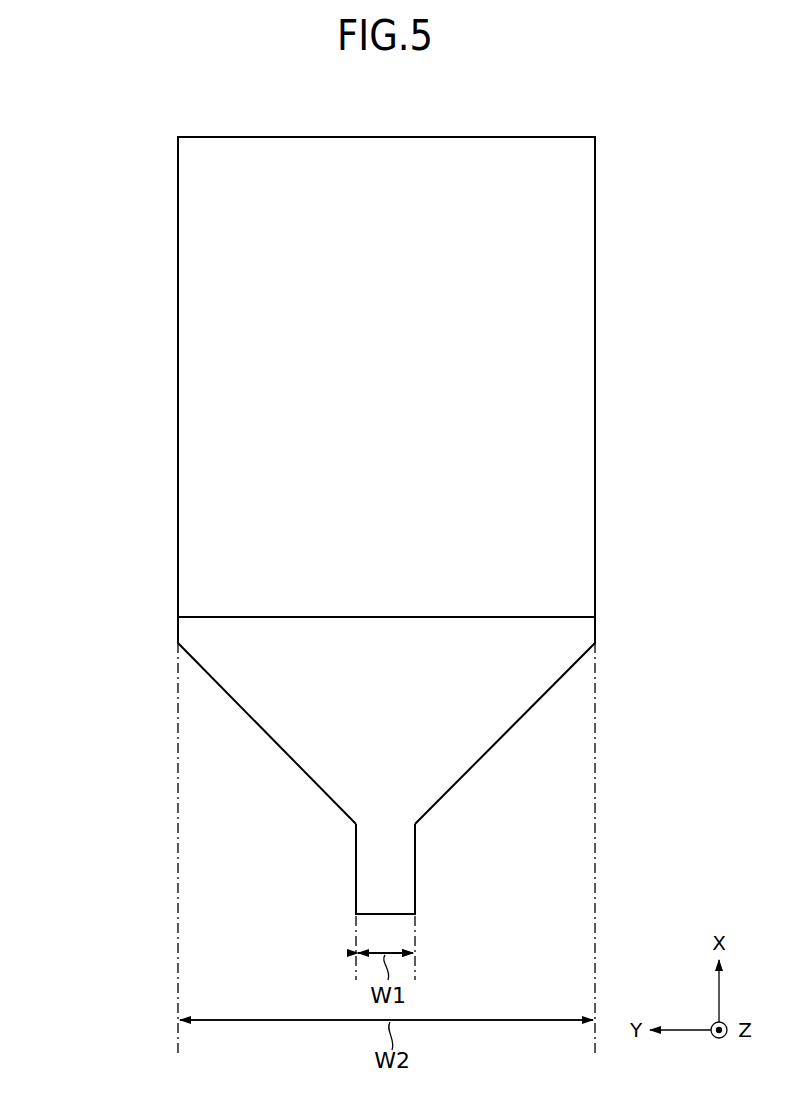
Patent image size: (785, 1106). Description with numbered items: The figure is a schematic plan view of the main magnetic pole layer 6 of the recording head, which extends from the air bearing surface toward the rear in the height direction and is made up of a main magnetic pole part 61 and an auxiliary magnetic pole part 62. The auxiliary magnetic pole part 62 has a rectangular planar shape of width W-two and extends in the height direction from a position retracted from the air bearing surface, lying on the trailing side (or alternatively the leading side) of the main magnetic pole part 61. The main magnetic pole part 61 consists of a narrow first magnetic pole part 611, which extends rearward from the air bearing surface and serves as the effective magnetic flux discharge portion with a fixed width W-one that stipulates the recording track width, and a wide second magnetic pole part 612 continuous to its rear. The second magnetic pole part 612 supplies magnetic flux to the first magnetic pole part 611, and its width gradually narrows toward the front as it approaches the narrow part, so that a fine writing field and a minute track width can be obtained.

The main magnetic pole layer 6 is at (65, 622).
The auxiliary magnetic pole part 62 is at (220, 617).
The main magnetic pole part 61 is at (118, 762).
The second magnetic pole part 612 is at (307, 774).
The first magnetic pole part 611 is at (356, 872).